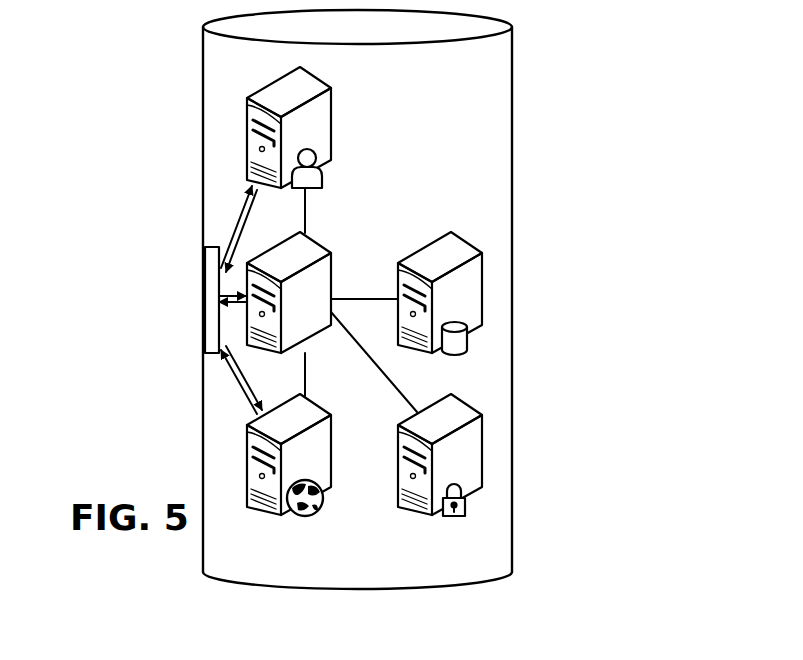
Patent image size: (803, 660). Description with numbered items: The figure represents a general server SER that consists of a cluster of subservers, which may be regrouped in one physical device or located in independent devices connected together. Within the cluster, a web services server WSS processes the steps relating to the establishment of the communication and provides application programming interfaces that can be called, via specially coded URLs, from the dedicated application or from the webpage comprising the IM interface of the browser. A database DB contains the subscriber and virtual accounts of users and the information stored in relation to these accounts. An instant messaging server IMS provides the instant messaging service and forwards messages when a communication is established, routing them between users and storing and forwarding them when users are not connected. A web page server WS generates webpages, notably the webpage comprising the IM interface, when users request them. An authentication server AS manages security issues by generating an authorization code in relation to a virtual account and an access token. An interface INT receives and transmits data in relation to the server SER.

The server SER is at (513, 57).
The interface INT is at (205, 260).
The instant messaging server IMS is at (333, 110).
The web services server WSS is at (320, 250).
The database DB is at (442, 235).
The web page server WS is at (272, 518).
The authentication server AS is at (470, 500).